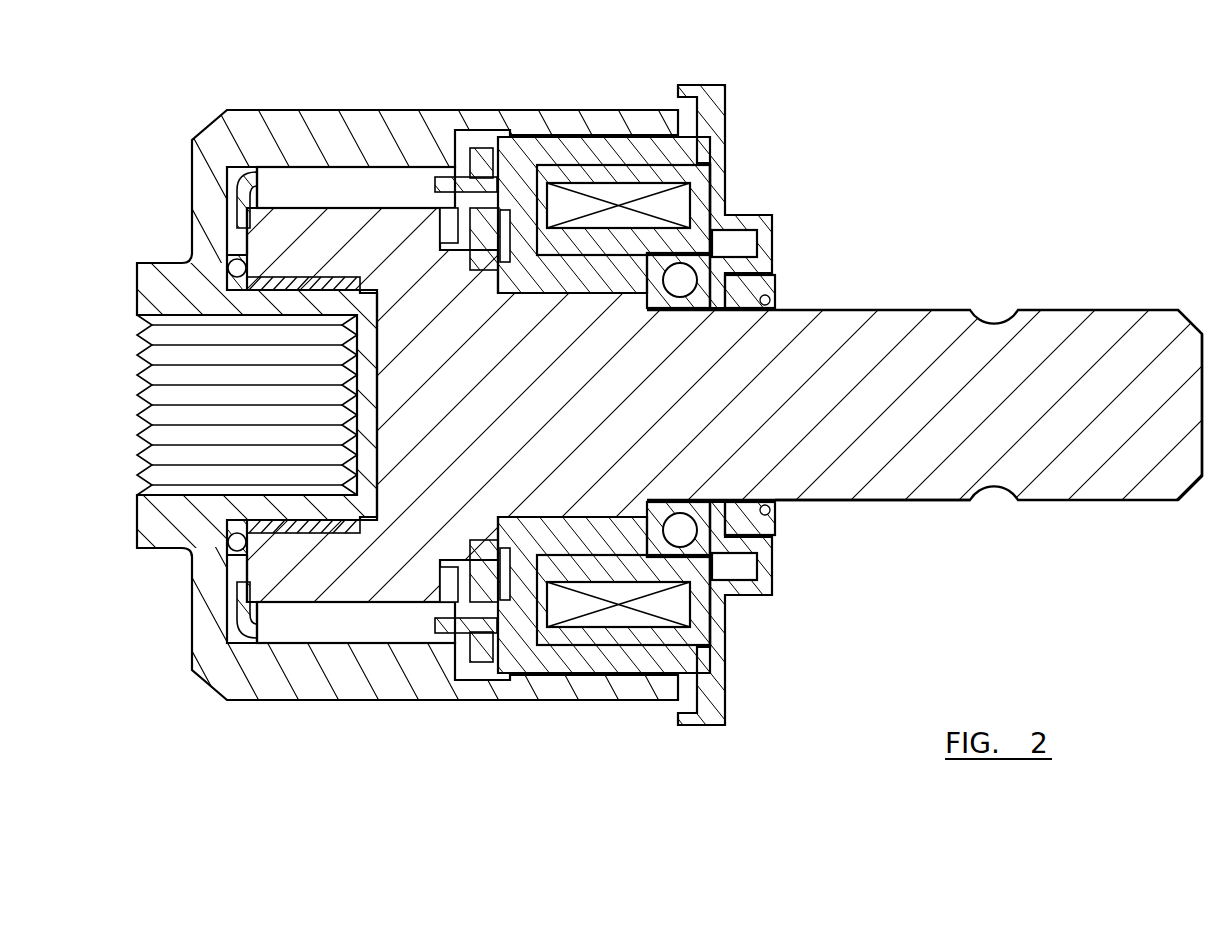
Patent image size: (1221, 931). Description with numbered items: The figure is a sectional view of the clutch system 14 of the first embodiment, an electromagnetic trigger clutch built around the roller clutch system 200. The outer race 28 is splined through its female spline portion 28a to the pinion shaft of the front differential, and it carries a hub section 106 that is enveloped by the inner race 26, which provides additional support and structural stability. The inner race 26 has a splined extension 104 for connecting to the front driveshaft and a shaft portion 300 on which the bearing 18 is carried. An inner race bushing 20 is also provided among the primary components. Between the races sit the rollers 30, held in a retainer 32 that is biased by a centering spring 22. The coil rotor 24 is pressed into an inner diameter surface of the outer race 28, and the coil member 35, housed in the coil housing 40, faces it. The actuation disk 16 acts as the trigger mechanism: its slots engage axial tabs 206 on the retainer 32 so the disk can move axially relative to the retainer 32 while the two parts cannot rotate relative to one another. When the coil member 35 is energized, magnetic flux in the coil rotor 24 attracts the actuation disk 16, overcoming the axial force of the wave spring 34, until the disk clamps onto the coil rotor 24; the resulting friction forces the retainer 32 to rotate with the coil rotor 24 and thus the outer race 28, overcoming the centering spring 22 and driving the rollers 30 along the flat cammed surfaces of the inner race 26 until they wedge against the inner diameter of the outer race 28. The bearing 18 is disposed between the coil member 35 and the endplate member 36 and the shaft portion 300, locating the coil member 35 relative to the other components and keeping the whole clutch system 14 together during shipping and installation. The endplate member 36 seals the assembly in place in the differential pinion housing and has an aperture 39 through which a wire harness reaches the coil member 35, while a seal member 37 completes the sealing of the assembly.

The clutch system 14 is at (680, 383).
The actuation disk 16 is at (487, 148).
The bearing 18 is at (721, 587).
The inner race bushing 20 is at (386, 530).
The centering spring 22 is at (258, 552).
The coil rotor 24 is at (706, 133).
The inner race 26 is at (1107, 518).
The outer race 28 is at (262, 708).
The female spline portion 28a is at (182, 474).
The rollers 30 is at (334, 184).
The retainer 32 is at (234, 640).
The wave spring 34 is at (503, 222).
The coil member 35 is at (626, 193).
The endplate member 36 is at (779, 243).
The seal member 37 is at (778, 298).
The aperture 39 is at (719, 188).
The coil housing 40 is at (605, 172).
The splined extension 104 is at (1086, 360).
The hub section 106 is at (313, 504).
The roller clutch system 200 is at (316, 162).
The axial tabs 206 is at (482, 186).
The shaft portion 300 is at (836, 490).